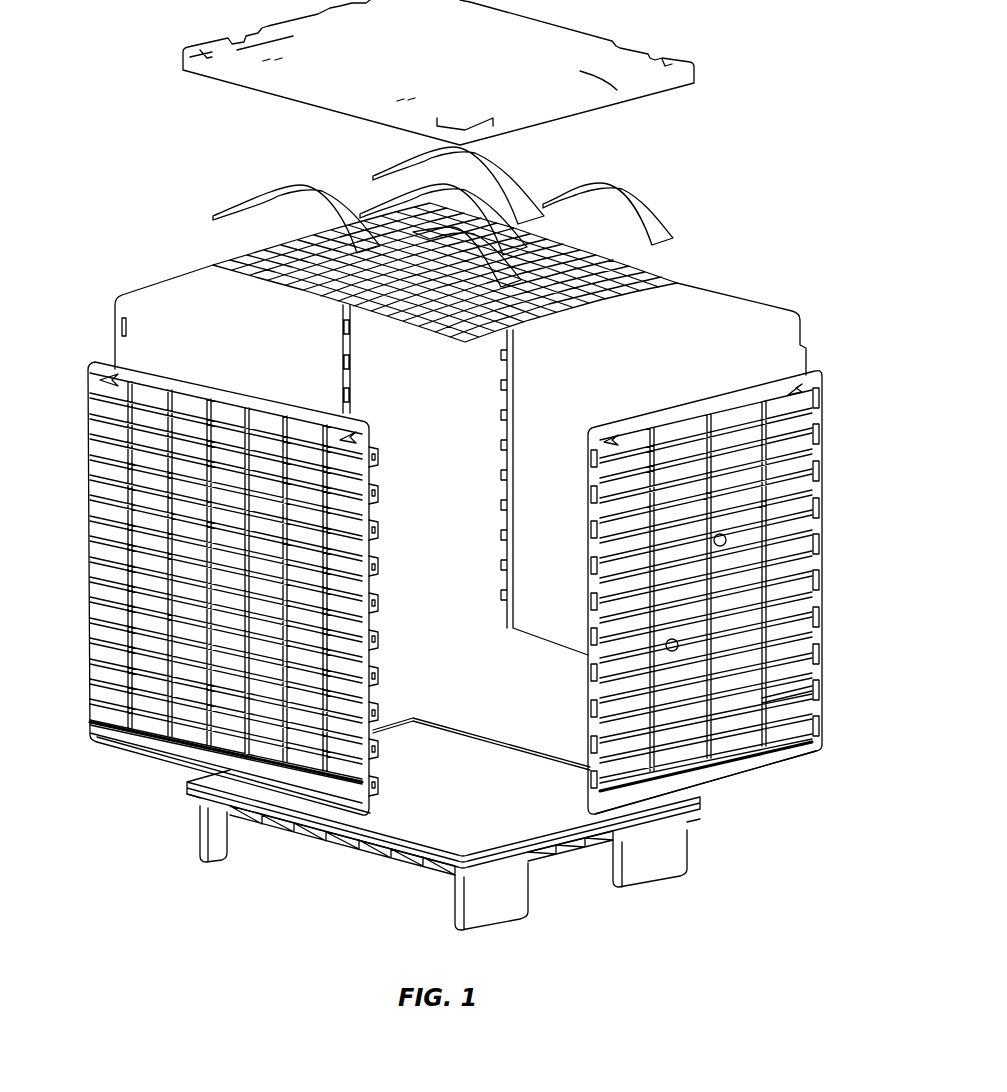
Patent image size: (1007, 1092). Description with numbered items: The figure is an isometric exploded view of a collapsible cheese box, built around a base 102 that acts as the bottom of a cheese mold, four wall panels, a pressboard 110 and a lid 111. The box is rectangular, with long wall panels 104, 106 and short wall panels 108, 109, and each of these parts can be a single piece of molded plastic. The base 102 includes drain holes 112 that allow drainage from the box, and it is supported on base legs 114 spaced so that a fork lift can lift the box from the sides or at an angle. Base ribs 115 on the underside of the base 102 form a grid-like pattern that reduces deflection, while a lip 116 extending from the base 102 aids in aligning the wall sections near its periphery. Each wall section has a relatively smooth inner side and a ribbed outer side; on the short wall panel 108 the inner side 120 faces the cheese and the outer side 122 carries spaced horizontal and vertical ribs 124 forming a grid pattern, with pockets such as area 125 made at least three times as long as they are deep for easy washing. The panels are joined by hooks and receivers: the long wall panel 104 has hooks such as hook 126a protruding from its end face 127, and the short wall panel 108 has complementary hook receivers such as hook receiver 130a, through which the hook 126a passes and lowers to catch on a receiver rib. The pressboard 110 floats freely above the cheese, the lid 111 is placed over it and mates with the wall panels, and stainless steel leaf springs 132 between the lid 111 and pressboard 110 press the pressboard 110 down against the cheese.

The base 102 is at (397, 795).
The wall panel 104 is at (256, 588).
The wall panel 106 is at (750, 300).
The wall panel 108 is at (667, 593).
The wall panel 109 is at (118, 298).
The pressboard 110 is at (227, 270).
The lid 111 is at (237, 62).
The drain holes 112 is at (465, 737).
The base legs 114 is at (200, 848).
The base ribs 115 is at (340, 847).
The lip 116 is at (420, 866).
The inner side 120 is at (586, 682).
The outer side 122 is at (824, 619).
The ribs 124 is at (770, 738).
The area 125 is at (793, 712).
The hook 126a is at (382, 490).
The end face 127 is at (375, 762).
The hook receiver 130a is at (590, 462).
The leaf springs 132 is at (637, 195).